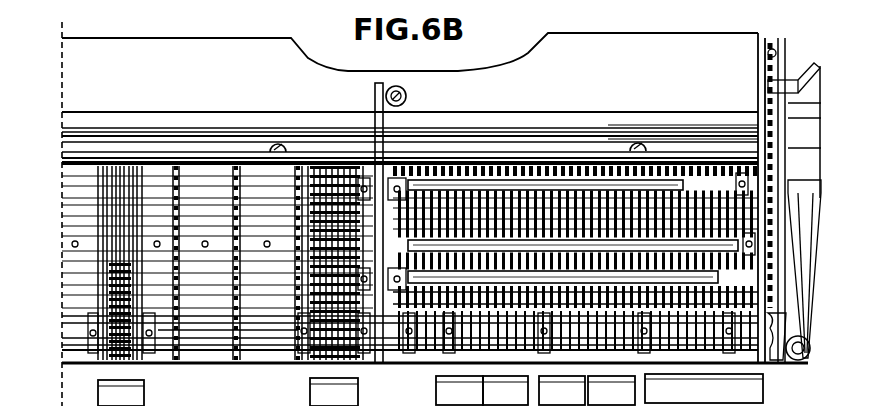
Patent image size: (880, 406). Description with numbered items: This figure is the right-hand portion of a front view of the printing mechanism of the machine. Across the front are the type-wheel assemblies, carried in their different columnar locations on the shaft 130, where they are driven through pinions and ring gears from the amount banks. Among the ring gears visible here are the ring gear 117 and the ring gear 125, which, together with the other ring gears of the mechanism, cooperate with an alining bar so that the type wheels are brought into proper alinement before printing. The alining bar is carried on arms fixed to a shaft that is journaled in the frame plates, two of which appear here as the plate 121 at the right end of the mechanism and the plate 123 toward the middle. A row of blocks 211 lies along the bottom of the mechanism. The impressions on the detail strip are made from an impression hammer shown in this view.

The ring gear 117 is at (428, 160).
The plate 121 is at (756, 77).
The plate 123 is at (367, 88).
The ring gear 125 is at (745, 124).
The shaft 130 is at (213, 310).
The base support block 211 is at (514, 388).